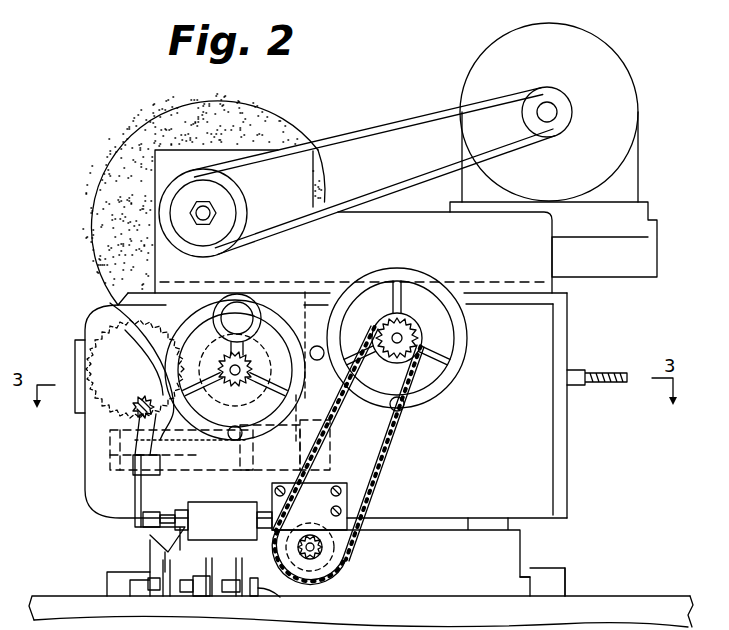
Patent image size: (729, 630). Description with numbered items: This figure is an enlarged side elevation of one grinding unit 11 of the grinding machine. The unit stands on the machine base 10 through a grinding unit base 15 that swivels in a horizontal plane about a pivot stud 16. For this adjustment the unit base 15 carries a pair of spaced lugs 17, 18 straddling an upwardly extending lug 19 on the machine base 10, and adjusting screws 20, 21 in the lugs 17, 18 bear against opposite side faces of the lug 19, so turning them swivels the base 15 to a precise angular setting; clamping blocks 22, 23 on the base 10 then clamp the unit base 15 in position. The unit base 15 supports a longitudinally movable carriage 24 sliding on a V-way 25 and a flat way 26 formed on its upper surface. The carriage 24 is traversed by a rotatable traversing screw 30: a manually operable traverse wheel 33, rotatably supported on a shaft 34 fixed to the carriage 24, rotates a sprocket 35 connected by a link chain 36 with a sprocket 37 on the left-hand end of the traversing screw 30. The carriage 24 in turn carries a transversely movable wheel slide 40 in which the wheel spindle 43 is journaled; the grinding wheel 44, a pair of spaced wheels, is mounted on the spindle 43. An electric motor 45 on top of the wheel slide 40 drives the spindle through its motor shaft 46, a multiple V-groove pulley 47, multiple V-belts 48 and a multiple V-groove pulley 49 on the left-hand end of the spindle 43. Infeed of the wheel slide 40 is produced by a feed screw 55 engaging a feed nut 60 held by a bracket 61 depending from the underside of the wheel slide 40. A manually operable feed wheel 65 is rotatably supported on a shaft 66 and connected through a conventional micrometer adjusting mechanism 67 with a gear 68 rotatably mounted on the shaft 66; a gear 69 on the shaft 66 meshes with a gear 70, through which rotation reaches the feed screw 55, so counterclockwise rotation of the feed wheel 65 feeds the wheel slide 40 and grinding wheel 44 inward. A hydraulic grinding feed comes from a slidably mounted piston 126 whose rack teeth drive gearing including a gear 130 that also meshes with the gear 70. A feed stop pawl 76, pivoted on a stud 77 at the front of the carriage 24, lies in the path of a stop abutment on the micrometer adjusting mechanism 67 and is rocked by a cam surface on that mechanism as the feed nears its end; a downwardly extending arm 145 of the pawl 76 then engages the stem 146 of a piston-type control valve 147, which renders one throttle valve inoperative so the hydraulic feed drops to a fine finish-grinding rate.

The machine base 10 is at (633, 596).
The grinding unit 11 is at (82, 458).
The grinding unit base 15 is at (532, 553).
The pivot stud 16 is at (200, 568).
The lug 17 is at (172, 585).
The lug 18 is at (243, 590).
The upwardly extending lug 19 is at (205, 588).
The adjusting screw 20 is at (150, 590).
The adjusting screw 21 is at (262, 588).
The clamping block 22 is at (107, 579).
The clamping block 23 is at (566, 582).
The carriage 24 is at (553, 467).
The V-way 25 is at (137, 538).
The flat way 26 is at (487, 529).
The traversing screw 30 is at (318, 551).
The traverse wheel 33 is at (467, 350).
The shaft 34 is at (412, 334).
The sprocket 35 is at (420, 374).
The link chain 36 is at (384, 447).
The sprocket 37 is at (335, 543).
The wheel slide 40 is at (410, 226).
The wheel spindle 43 is at (217, 213).
The grinding wheel 44 is at (80, 190).
The electric motor 45 is at (626, 108).
The motor shaft 46 is at (550, 106).
The multiple V-groove pulley 47 is at (555, 125).
The multiple V-belts 48 is at (388, 124).
The multiple V-groove pulley 49 is at (182, 182).
The feed screw 55 is at (326, 350).
The feed nut 60 is at (297, 410).
The bracket 61 is at (306, 300).
The feed wheel 65 is at (117, 303).
The shaft 66 is at (242, 379).
The micrometer adjusting mechanism 67 is at (237, 294).
The gear 68 is at (203, 370).
The gear 69 is at (267, 368).
The gear 70 is at (85, 330).
The feed stop pawl 76 is at (118, 328).
The stud 77 is at (110, 409).
The piston 126 is at (262, 455).
The gear 130 is at (181, 450).
The downwardly extending arm 145 is at (133, 488).
The valve stem 146 is at (141, 520).
The control valve 147 is at (219, 510).